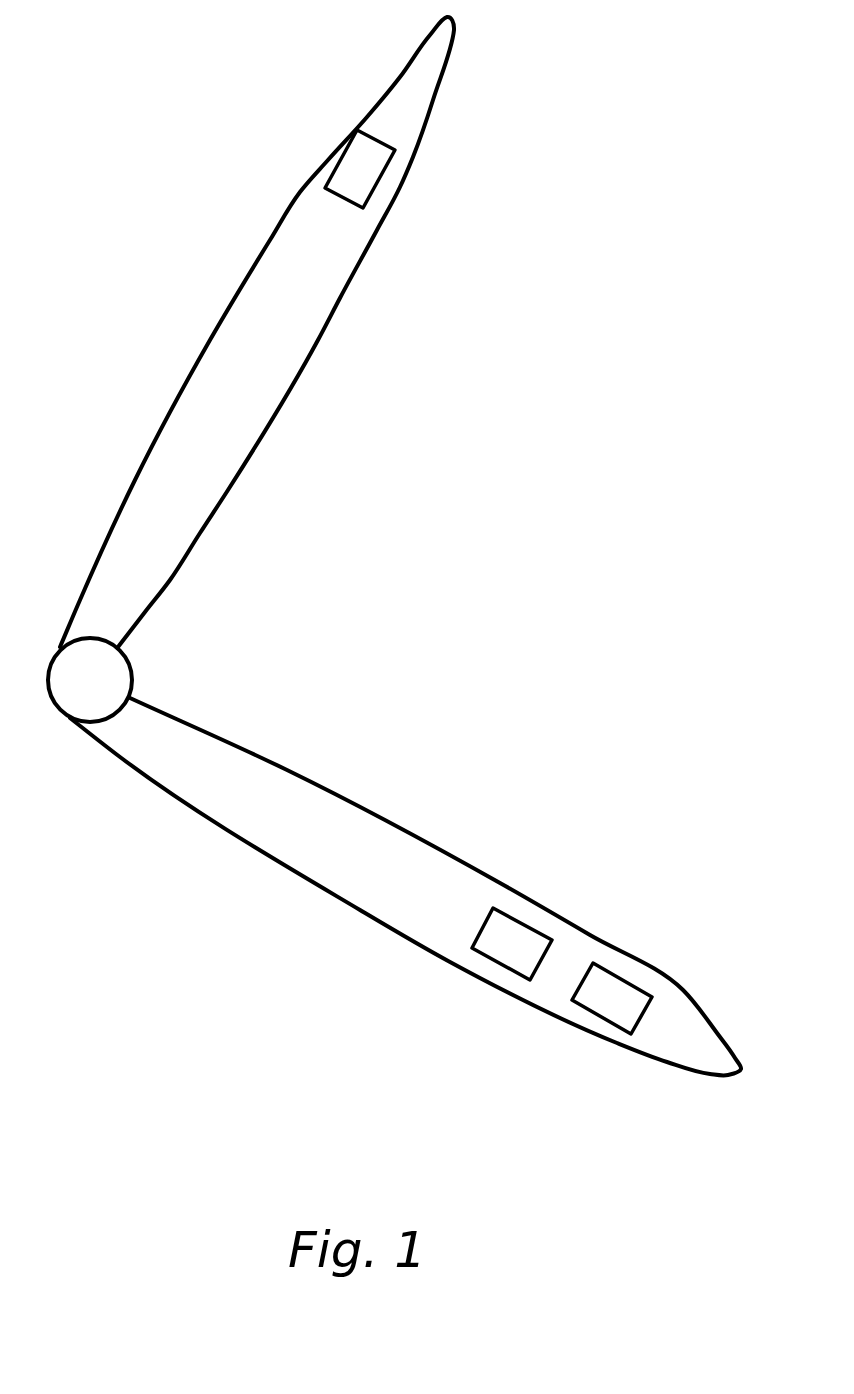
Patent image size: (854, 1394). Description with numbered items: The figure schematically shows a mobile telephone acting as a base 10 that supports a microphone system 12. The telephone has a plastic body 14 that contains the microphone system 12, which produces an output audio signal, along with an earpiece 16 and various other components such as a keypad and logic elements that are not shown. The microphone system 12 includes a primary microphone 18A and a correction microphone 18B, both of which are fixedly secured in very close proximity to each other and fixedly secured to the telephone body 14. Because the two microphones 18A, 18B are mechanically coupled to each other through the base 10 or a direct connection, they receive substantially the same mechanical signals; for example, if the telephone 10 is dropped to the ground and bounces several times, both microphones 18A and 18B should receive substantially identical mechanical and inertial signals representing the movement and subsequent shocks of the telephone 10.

The base 10 is at (133, 321).
The microphone system 12 is at (612, 902).
The plastic body 14 is at (223, 460).
The earpiece 16 is at (378, 183).
The primary microphone 18A is at (513, 962).
The correction microphone 18B is at (597, 1020).